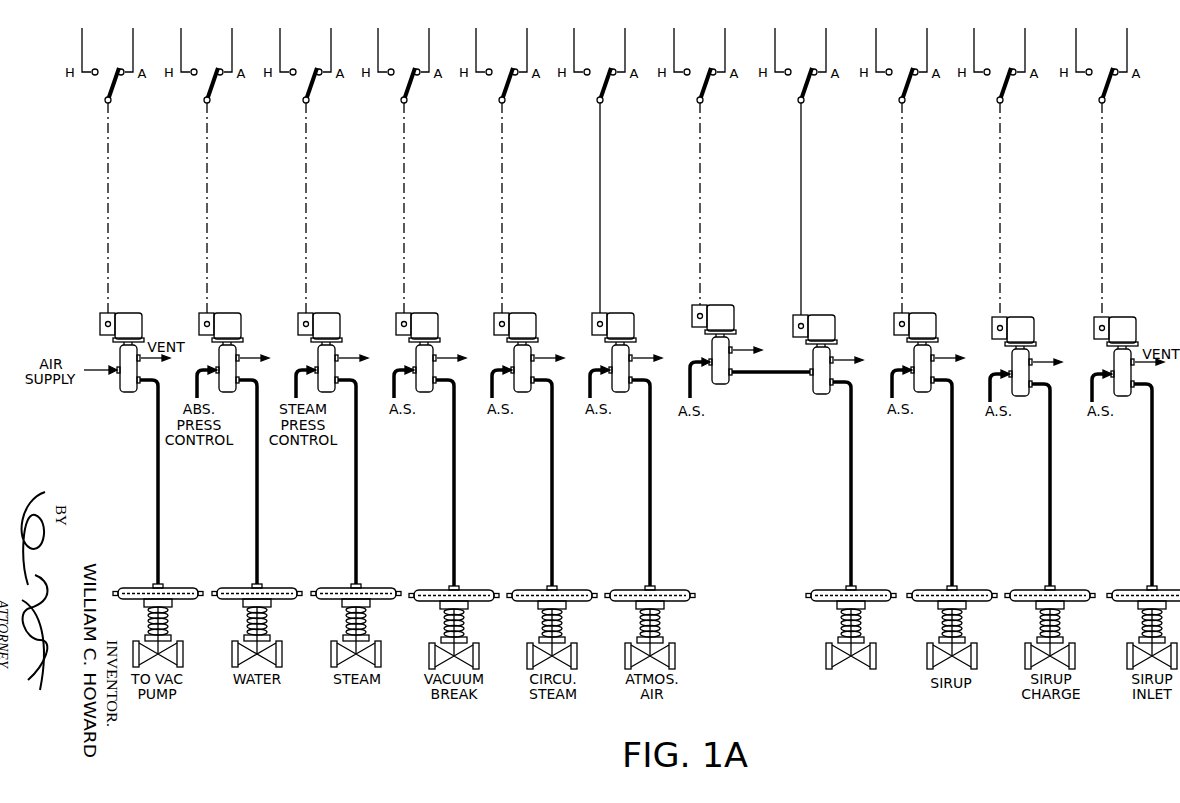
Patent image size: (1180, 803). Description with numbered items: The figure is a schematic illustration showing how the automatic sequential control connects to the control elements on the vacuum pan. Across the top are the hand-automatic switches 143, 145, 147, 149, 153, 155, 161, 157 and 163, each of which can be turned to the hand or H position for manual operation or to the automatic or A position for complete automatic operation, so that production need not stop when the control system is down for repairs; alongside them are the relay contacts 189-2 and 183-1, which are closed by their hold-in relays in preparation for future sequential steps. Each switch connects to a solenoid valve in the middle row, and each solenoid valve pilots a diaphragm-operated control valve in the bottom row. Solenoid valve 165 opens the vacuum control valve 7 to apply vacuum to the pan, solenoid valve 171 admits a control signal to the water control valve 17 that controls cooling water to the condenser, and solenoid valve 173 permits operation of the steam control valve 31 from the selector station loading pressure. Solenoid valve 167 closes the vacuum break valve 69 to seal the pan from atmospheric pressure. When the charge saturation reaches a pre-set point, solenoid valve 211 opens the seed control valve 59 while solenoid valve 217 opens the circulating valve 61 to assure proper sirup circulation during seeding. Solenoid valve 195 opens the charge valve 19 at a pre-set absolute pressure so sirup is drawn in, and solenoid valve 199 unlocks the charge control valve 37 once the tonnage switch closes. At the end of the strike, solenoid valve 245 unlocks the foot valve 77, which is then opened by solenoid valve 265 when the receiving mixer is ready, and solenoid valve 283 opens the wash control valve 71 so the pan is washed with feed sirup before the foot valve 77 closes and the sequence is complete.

The hand-automatic switch 143 is at (114, 89).
The hand-automatic switch 145 is at (213, 89).
The hand-automatic switch 147 is at (312, 89).
The hand-automatic switch 149 is at (410, 89).
The hand-automatic switch 153 is at (508, 89).
The hand-automatic switch 155 is at (606, 89).
The hand-automatic switch 161 is at (706, 89).
The hand-automatic switch 157 is at (807, 89).
The hand-automatic switch 163 is at (908, 89).
The contact of relay 189 189-2 is at (1006, 89).
The contact of relay 183 183-1 is at (1108, 89).
The solenoid valve 165 is at (127, 313).
The solenoid valve 171 is at (226, 313).
The solenoid valve 173 is at (325, 313).
The solenoid valve 167 is at (423, 313).
The solenoid valve 217 is at (521, 313).
The solenoid valve 211 is at (619, 313).
The solenoid valve 265 is at (722, 305).
The solenoid valve 245 is at (823, 315).
The solenoid valve 283 is at (921, 313).
The solenoid valve 195 is at (1021, 317).
The solenoid valve 199 is at (1123, 317).
The vacuum control valve 7 is at (167, 621).
The water control valve 17 is at (266, 621).
The steam control valve 31 is at (365, 621).
The vacuum break valve 69 is at (463, 623).
The circulating valve 61 is at (561, 623).
The seed control valve 59 is at (659, 623).
The foot valve 77 is at (843, 627).
The wash control valve 71 is at (944, 627).
The charge valve 19 is at (1042, 627).
The charge control valve 37 is at (1144, 627).